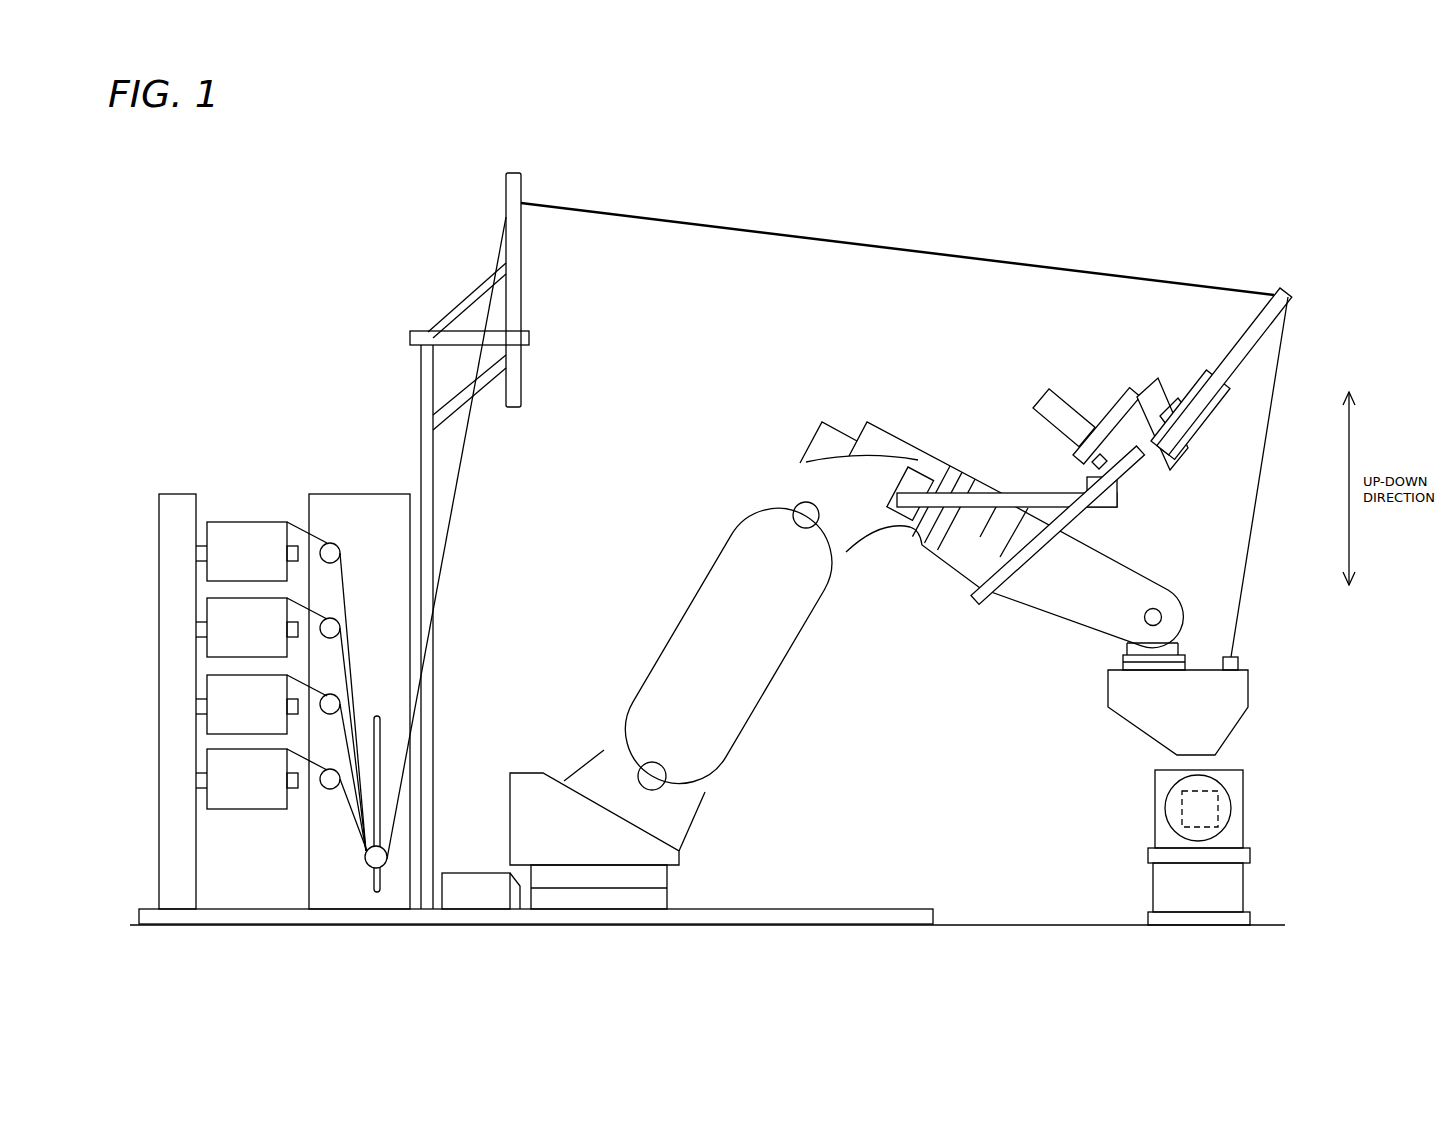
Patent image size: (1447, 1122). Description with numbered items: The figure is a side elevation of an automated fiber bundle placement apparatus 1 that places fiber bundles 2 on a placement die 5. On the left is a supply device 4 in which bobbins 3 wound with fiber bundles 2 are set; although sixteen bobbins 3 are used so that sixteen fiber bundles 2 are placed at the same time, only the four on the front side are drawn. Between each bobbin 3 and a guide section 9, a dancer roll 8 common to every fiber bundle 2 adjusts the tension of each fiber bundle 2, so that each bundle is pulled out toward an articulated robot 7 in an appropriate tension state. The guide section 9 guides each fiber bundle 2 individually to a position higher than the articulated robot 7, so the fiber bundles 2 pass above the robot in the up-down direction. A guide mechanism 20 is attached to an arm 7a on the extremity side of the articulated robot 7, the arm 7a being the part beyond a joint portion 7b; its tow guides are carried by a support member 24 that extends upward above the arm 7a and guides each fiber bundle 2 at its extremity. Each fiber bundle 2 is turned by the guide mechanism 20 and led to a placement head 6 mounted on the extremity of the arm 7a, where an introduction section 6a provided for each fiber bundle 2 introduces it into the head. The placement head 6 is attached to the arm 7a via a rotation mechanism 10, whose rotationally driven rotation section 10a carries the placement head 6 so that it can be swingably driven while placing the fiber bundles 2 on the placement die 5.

The automated fiber bundle placement apparatus 1 is at (205, 237).
The fiber bundle 2 is at (837, 238).
The bobbin 3 is at (245, 507).
The supply device 4 is at (310, 372).
The placement die 5 is at (1245, 808).
The placement head 6 is at (1153, 722).
The introduction section 6a is at (1240, 663).
The articulated robot 7 is at (812, 589).
The arm 7a is at (1063, 600).
The joint portion 7b is at (912, 428).
The dancer roll 8 is at (366, 867).
The guide section 9 is at (440, 238).
The rotation mechanism 10 is at (1095, 658).
The rotation section 10a is at (1183, 652).
The guide mechanism 20 is at (1082, 365).
The support member 24 is at (1266, 292).